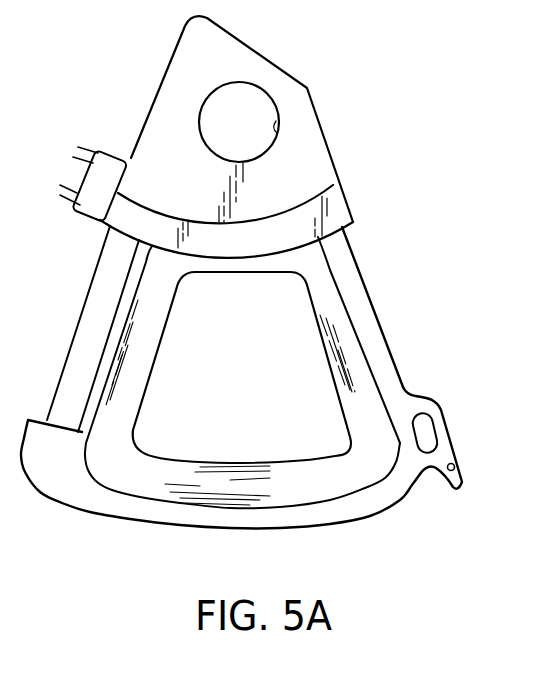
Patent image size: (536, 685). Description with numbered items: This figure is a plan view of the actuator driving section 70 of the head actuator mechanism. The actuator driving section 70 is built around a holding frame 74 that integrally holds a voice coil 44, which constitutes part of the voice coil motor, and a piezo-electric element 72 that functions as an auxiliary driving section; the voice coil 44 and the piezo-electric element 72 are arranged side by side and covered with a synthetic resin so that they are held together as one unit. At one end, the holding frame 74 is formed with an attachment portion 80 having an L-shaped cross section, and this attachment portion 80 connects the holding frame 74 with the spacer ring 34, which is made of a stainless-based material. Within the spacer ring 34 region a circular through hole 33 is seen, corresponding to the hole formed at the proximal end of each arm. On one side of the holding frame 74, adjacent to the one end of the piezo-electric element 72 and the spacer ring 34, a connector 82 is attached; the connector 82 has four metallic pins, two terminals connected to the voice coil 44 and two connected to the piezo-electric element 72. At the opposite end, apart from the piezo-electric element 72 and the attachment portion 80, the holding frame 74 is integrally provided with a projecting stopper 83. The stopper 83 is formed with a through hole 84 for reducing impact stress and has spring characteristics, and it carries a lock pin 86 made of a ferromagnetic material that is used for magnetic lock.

The actuator driving section 70 is at (404, 345).
The spacer ring 34 is at (253, 72).
The circular through hole 33 is at (276, 128).
The attachment portion 80 is at (334, 212).
The connector 82 is at (110, 163).
The piezo-electric element 72 is at (83, 344).
The voice coil 44 is at (343, 317).
The holding frame 74 is at (85, 503).
The stopper 83 is at (452, 430).
The through hole 84 is at (427, 419).
The lock pin 86 is at (465, 470).